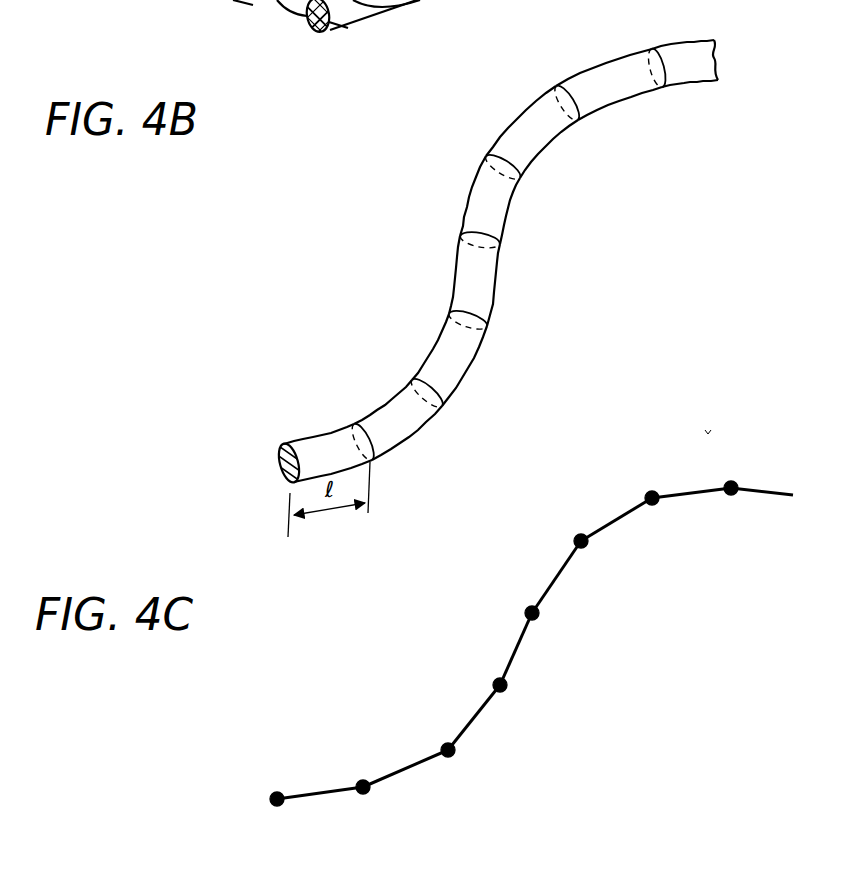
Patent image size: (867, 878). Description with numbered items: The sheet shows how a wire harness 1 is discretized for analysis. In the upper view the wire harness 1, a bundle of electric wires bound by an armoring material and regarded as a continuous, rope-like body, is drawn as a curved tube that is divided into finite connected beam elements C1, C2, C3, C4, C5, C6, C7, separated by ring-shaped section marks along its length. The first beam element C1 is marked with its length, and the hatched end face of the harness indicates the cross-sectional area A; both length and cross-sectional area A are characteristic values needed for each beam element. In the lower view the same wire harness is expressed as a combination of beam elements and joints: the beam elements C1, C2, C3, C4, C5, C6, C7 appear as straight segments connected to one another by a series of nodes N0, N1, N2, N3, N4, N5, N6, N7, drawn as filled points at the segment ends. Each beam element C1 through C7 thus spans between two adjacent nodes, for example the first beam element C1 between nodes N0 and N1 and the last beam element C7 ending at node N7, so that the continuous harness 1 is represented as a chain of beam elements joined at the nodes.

In FIG. 4B, the wire harness 1 is at (508, 114).
In FIG. 4B, the cross-sectional area A is at (278, 467).
In FIG. 4B, the beam element C1 is at (325, 443).
In FIG. 4C, the beam element C1 is at (317, 797).
In FIG. 4B, the beam element C2 is at (403, 427).
In FIG. 4C, the beam element C2 is at (405, 772).
In FIG. 4B, the beam element C3 is at (445, 353).
In FIG. 4C, the beam element C3 is at (473, 718).
In FIG. 4B, the beam element C4 is at (483, 287).
In FIG. 4C, the beam element C4 is at (522, 645).
In FIG. 4B, the beam element C5 is at (477, 195).
In FIG. 4C, the beam element C5 is at (560, 578).
In FIG. 4B, the beam element C6 is at (538, 143).
In FIG. 4C, the beam element C6 is at (617, 522).
In FIG. 4B, the beam element C7 is at (607, 77).
In FIG. 4C, the beam element C7 is at (685, 497).
In FIG. 4C, the node N0 is at (274, 792).
In FIG. 4C, the node N1 is at (362, 780).
In FIG. 4C, the node N2 is at (443, 745).
In FIG. 4C, the node N3 is at (495, 682).
In FIG. 4C, the node N4 is at (528, 608).
In FIG. 4C, the node N5 is at (575, 537).
In FIG. 4C, the node N6 is at (645, 495).
In FIG. 4C, the node N7 is at (731, 483).